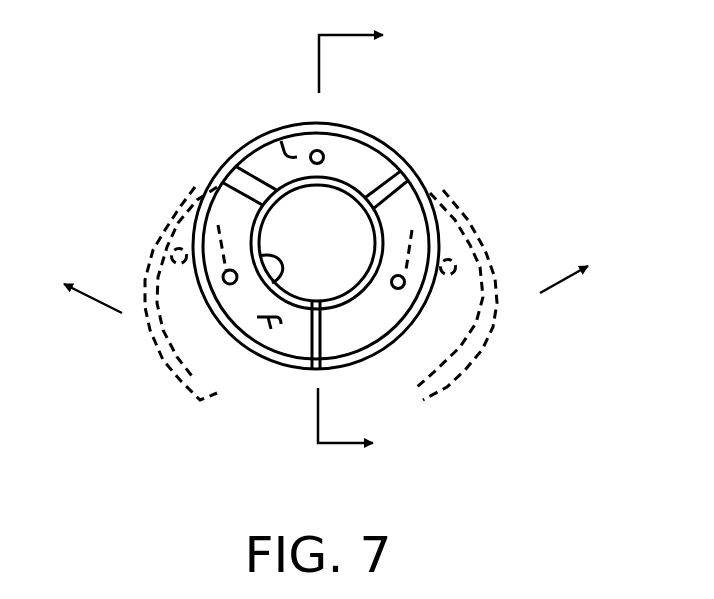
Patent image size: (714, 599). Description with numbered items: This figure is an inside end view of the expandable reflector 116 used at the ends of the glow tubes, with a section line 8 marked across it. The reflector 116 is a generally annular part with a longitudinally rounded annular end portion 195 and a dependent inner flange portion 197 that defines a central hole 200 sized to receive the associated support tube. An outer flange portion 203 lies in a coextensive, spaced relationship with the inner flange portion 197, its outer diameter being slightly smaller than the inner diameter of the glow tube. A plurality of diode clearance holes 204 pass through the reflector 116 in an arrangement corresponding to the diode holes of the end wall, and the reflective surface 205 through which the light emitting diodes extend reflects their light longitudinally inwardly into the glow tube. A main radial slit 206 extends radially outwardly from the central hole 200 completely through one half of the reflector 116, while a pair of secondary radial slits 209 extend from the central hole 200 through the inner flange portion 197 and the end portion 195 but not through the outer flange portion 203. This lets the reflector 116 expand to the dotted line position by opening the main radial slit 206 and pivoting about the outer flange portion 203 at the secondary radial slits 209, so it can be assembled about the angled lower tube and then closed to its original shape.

The section line 8- 8 is at (330, 248).
The expandable reflector 116 is at (450, 120).
The longitudinally rounded annular end portion 195 is at (276, 328).
The dependent inner flange portion 197 is at (238, 170).
The central hole 200 is at (262, 281).
The outer flange portion 203 is at (396, 172).
The diode clearance holes 204 is at (326, 149).
The reflective surface 205 is at (283, 140).
The main radial slit 206 is at (323, 352).
The secondary radial slits 209 is at (200, 227).